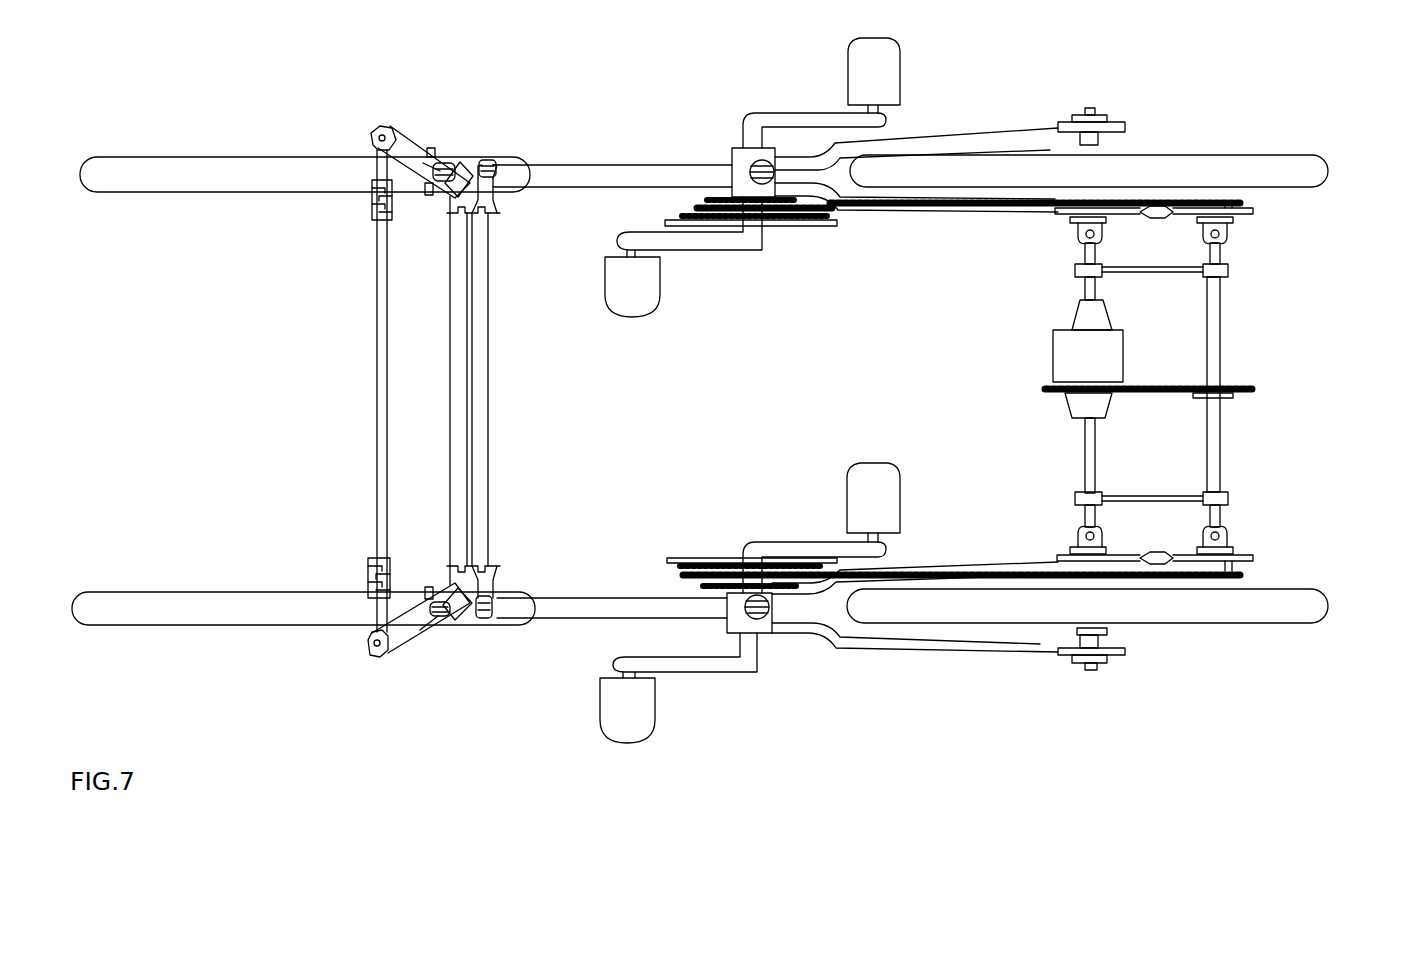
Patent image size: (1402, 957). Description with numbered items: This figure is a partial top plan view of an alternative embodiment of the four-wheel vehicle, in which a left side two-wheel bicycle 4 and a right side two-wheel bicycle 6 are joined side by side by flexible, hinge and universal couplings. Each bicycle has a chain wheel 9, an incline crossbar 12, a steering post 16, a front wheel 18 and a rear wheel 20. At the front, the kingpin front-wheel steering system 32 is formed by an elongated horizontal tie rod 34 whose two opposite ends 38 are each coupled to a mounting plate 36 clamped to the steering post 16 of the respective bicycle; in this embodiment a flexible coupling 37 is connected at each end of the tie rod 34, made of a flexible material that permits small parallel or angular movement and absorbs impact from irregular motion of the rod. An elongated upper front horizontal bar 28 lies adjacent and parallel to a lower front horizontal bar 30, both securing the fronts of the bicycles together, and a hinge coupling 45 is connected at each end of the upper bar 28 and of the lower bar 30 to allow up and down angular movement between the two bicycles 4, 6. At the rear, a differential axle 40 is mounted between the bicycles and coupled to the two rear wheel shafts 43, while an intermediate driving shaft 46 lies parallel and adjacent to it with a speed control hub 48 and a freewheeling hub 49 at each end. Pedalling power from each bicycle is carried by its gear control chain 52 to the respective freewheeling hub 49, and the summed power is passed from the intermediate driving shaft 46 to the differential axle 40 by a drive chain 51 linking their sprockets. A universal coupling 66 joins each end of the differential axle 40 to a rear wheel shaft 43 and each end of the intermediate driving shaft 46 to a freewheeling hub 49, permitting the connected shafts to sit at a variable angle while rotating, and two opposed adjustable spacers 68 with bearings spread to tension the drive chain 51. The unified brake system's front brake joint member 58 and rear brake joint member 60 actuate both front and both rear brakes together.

The left side two-wheel bicycle 4 is at (827, 677).
The right side two-wheel bicycle 6 is at (946, 82).
The chain wheel 9 is at (802, 227).
The incline crossbar 12 is at (558, 164).
The steering post 16 is at (441, 185).
The front wheel 18 is at (100, 192).
The rear wheel 20 is at (1325, 171).
The upper front horizontal bar 28 is at (489, 392).
The lower front horizontal bar 30 is at (452, 347).
The front-wheel steering system 32 is at (335, 320).
The tie rod 34 is at (377, 425).
The mounting plate 36 is at (412, 143).
The flexible coupling 37 is at (372, 212).
The end of tie rod 38 is at (383, 128).
The differential axle 40 is at (1042, 354).
The rear wheel shaft 43 is at (1090, 108).
The hinge coupling 45 is at (490, 203).
The intermediate driving shaft 46 is at (1238, 335).
The speed control hub 48 is at (1240, 216).
The freewheeling hub 49 is at (1228, 200).
The drive chain 51 is at (1132, 394).
The gear control chain 52 is at (898, 208).
The front brake joint member 58 is at (428, 587).
The rear brake joint member 60 is at (435, 148).
The universal coupling 66 is at (1076, 230).
The adjustable spacer 68 is at (1146, 277).